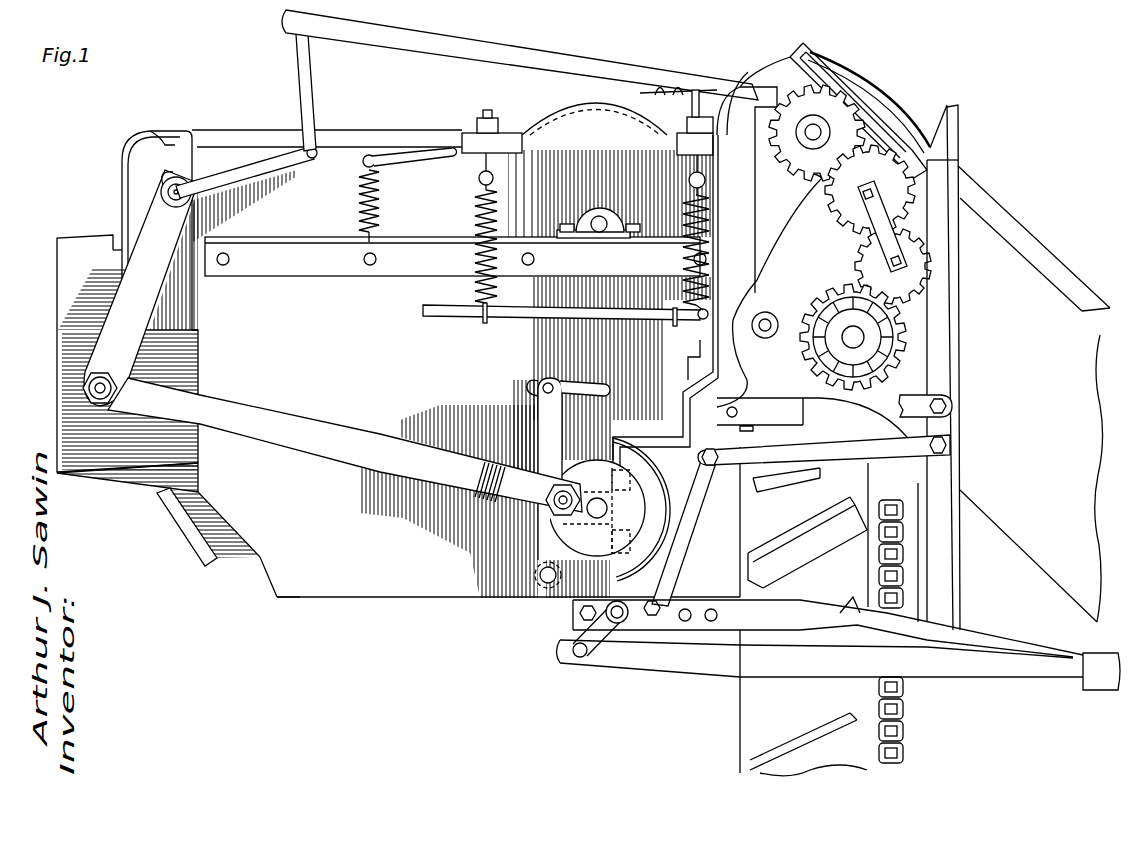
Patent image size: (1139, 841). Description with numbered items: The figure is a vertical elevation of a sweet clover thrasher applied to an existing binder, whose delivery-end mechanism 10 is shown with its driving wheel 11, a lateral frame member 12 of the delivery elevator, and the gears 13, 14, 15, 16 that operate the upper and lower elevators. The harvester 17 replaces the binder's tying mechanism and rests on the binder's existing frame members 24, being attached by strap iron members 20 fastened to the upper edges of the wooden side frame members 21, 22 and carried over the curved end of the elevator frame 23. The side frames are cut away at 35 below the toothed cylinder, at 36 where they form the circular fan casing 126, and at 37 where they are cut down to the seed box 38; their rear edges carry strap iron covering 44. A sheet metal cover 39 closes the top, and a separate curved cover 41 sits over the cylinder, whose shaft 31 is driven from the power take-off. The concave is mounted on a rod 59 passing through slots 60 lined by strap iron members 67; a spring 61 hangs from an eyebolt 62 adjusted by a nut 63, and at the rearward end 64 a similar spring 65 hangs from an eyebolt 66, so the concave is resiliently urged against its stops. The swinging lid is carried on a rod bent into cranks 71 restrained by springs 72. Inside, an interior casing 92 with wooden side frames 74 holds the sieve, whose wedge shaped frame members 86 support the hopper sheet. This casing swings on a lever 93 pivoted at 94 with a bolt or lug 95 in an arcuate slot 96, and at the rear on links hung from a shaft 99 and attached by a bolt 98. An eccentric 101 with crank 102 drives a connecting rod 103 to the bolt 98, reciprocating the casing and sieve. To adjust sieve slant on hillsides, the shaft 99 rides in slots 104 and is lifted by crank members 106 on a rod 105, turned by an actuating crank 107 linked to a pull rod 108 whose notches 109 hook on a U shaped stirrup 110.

The mechanism of the delivery end of an ordinary binder 10 is at (1105, 381).
The driving wheel 11 is at (738, 732).
The lateral frame member 12 is at (883, 132).
The gear 13 is at (840, 108).
The gear 14 is at (893, 180).
The gear 15 is at (920, 264).
The gear 16 is at (880, 385).
The harvester 17 is at (108, 208).
The strap iron member 20 is at (730, 203).
The frame member 21 is at (247, 567).
The frame member 22 is at (455, 230).
The curved end of the elevator frame 23 is at (860, 55).
The frame member of the binder 24 is at (683, 603).
The shaft 31 is at (600, 222).
The deviation of side frames below the toothed cylinder 35 is at (647, 440).
The circular portion of frame members 36 is at (690, 545).
The cut-down portion of side members below the sieve 37 is at (277, 597).
The seed box 38 is at (182, 533).
The sheet metal cover 39 is at (230, 143).
The curved sheet metal cover 41 is at (552, 115).
The strap iron covering 44 is at (122, 185).
The rod 59 is at (705, 318).
The slot 60 is at (707, 350).
The spring 61 is at (710, 217).
The eyebolt 62 is at (706, 178).
The nut 63 is at (692, 122).
The rearward end of the rod 64 is at (455, 320).
The spring 65 is at (475, 222).
The eyebolt 66 is at (479, 165).
The strap iron member 67 is at (692, 358).
The crank 71 is at (402, 157).
The spring 72 is at (360, 208).
The side frame 74 is at (58, 285).
The wedge shaped frame member 86 is at (147, 477).
The interior casing 92 is at (62, 365).
The lever 93 is at (550, 418).
The pivot of lever 93 94 is at (546, 582).
The bolt or lug 95 is at (543, 387).
The arcuate slot 96 is at (570, 380).
The bolt 98 is at (83, 387).
The shaft 99 is at (182, 186).
The eccentric 101 is at (590, 516).
The crank 102 is at (553, 506).
The connecting rod 103 is at (310, 432).
The slot 104 is at (175, 143).
The rod 105 is at (316, 150).
The crank member 106 is at (257, 168).
The actuating crank 107 is at (300, 58).
The pull rod 108 is at (482, 50).
The notch 109 is at (678, 85).
The U shaped stirrup 110 is at (695, 100).
The exterior circular casing of the fan 126 is at (700, 508).